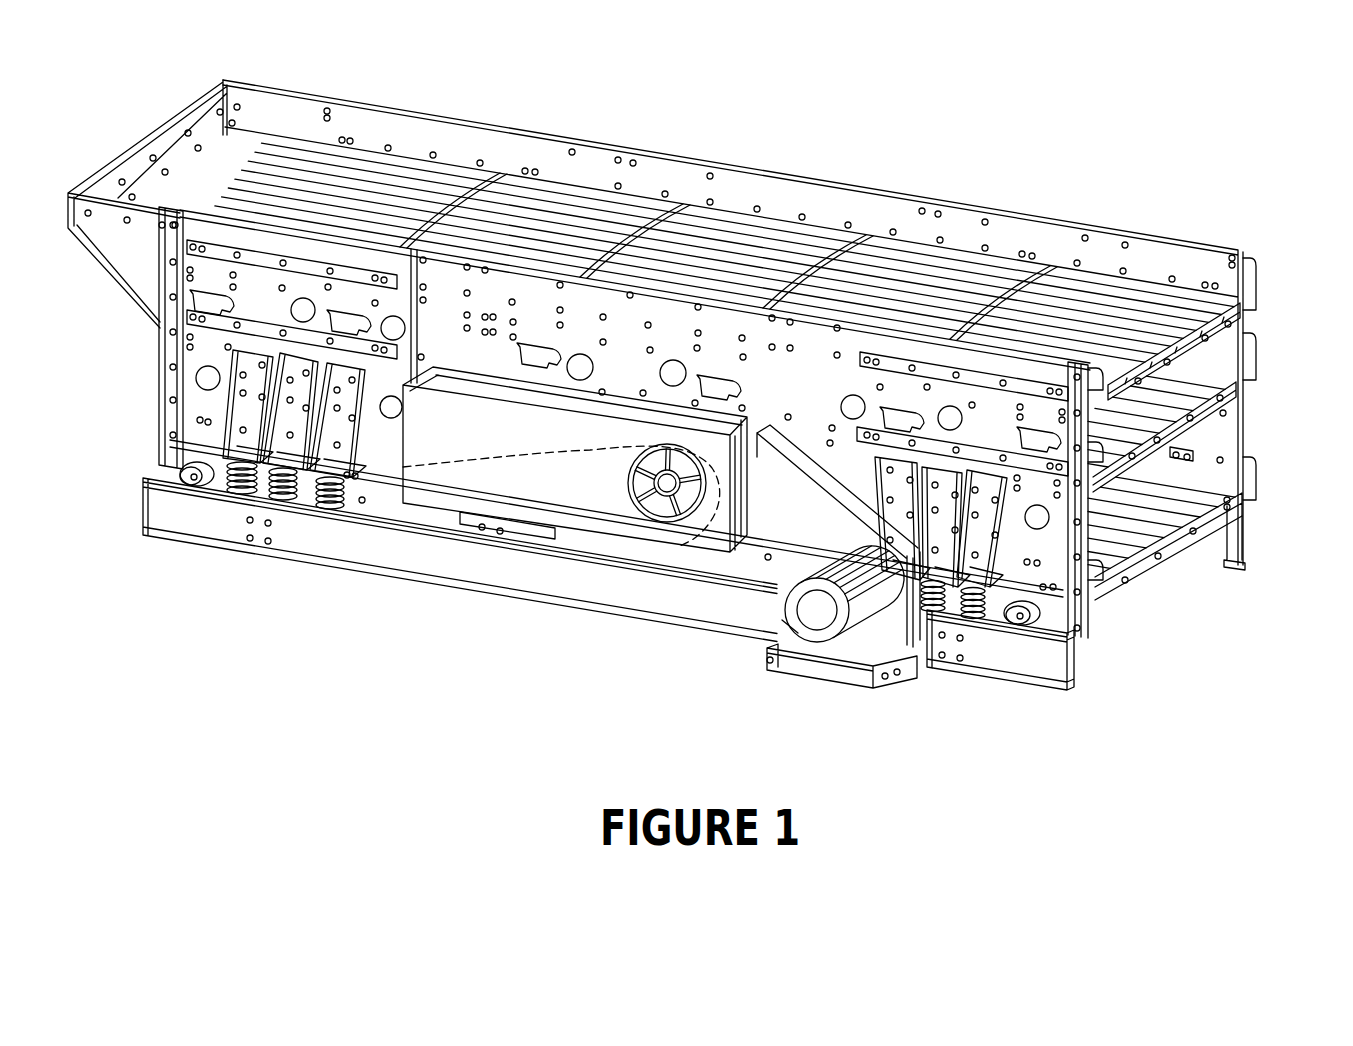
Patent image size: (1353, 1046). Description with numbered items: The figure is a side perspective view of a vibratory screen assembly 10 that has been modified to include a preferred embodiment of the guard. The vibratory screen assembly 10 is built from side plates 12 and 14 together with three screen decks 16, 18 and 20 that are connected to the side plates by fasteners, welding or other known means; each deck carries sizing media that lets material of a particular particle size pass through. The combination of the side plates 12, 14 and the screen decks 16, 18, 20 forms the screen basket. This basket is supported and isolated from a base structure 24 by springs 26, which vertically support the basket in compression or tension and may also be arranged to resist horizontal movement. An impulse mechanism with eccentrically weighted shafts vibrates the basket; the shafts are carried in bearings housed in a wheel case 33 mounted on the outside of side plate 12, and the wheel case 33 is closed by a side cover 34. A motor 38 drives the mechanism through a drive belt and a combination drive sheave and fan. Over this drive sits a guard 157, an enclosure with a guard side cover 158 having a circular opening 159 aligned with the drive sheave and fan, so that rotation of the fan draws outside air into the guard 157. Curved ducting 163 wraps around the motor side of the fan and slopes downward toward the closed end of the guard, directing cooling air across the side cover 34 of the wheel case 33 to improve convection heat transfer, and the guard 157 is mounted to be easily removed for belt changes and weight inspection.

The vibratory screen assembly 10 is at (1129, 145).
The side plate 12 is at (204, 401).
The side plate 14 is at (805, 196).
The screen deck 16 is at (1240, 310).
The screen deck 18 is at (1200, 392).
The screen deck 20 is at (1198, 512).
The base structure 24 is at (410, 556).
The springs 26 is at (240, 507).
The wheel case 33 is at (590, 381).
The side cover 34 is at (640, 524).
The motor 38 is at (818, 622).
The guard 157 is at (570, 539).
The guard side cover 158 is at (575, 454).
The circular opening 159 is at (627, 546).
The curved ducting 163 is at (498, 454).